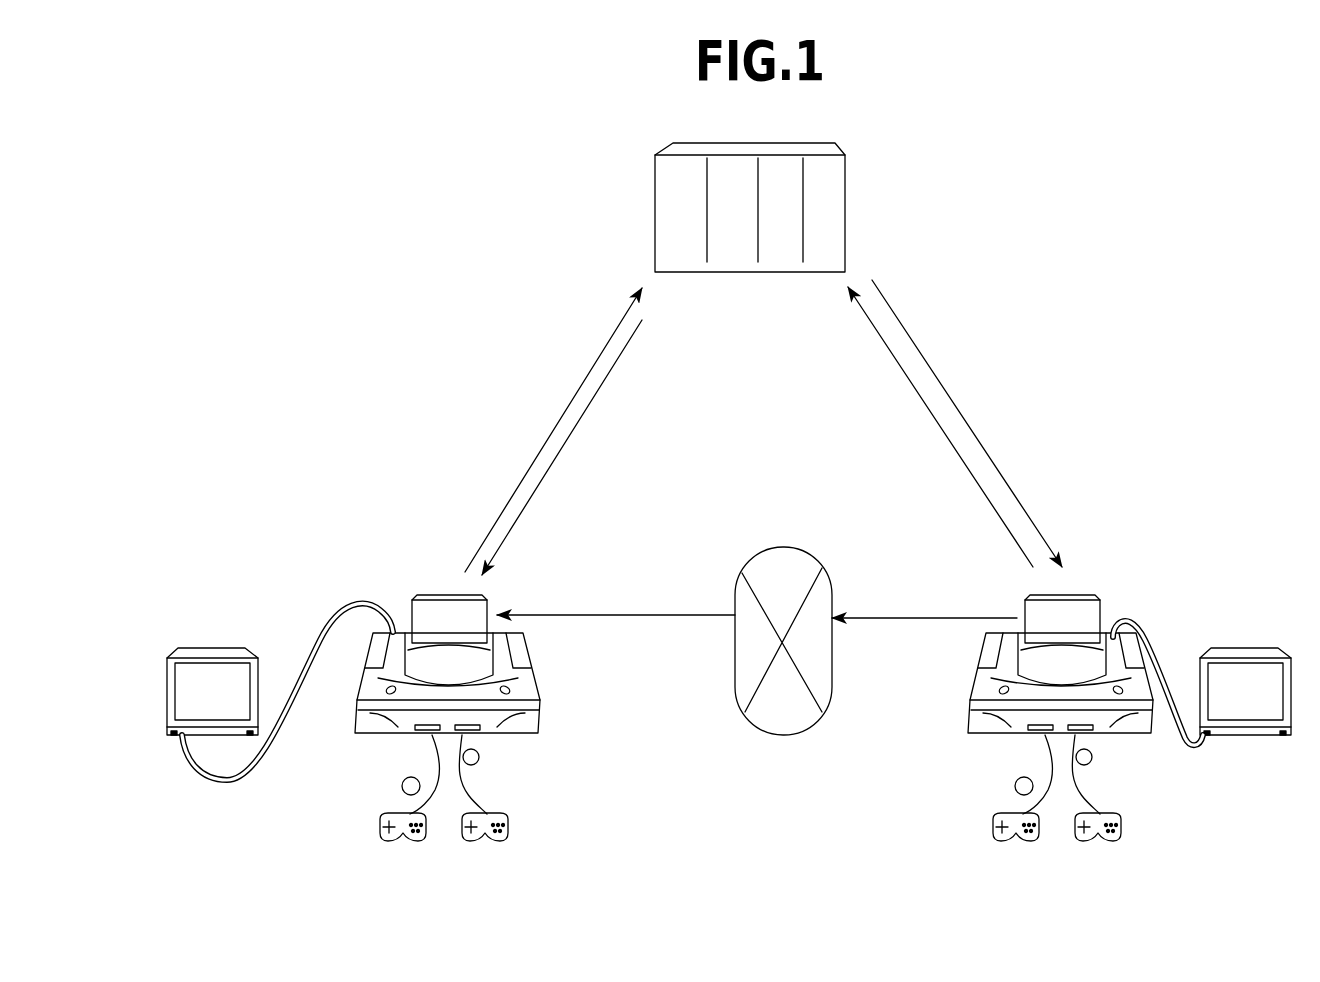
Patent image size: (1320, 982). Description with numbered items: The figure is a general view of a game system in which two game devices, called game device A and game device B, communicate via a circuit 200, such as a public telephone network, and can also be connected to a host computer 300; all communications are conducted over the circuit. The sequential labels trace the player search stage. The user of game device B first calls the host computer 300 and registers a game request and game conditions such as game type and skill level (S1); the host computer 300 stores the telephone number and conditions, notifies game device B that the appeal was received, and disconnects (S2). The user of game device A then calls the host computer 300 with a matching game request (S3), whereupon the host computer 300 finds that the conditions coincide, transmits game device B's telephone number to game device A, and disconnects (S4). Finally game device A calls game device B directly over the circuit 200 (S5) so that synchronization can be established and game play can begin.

The circuit 200 is at (778, 735).
The host computer 300 is at (845, 202).
The game request registration S1 is at (553, 430).
The notification and disconnection S2 is at (562, 447).
The game request by game device A S3 is at (940, 427).
The telephone number transmission S4 is at (967, 423).
The direct call S5 is at (924, 601).